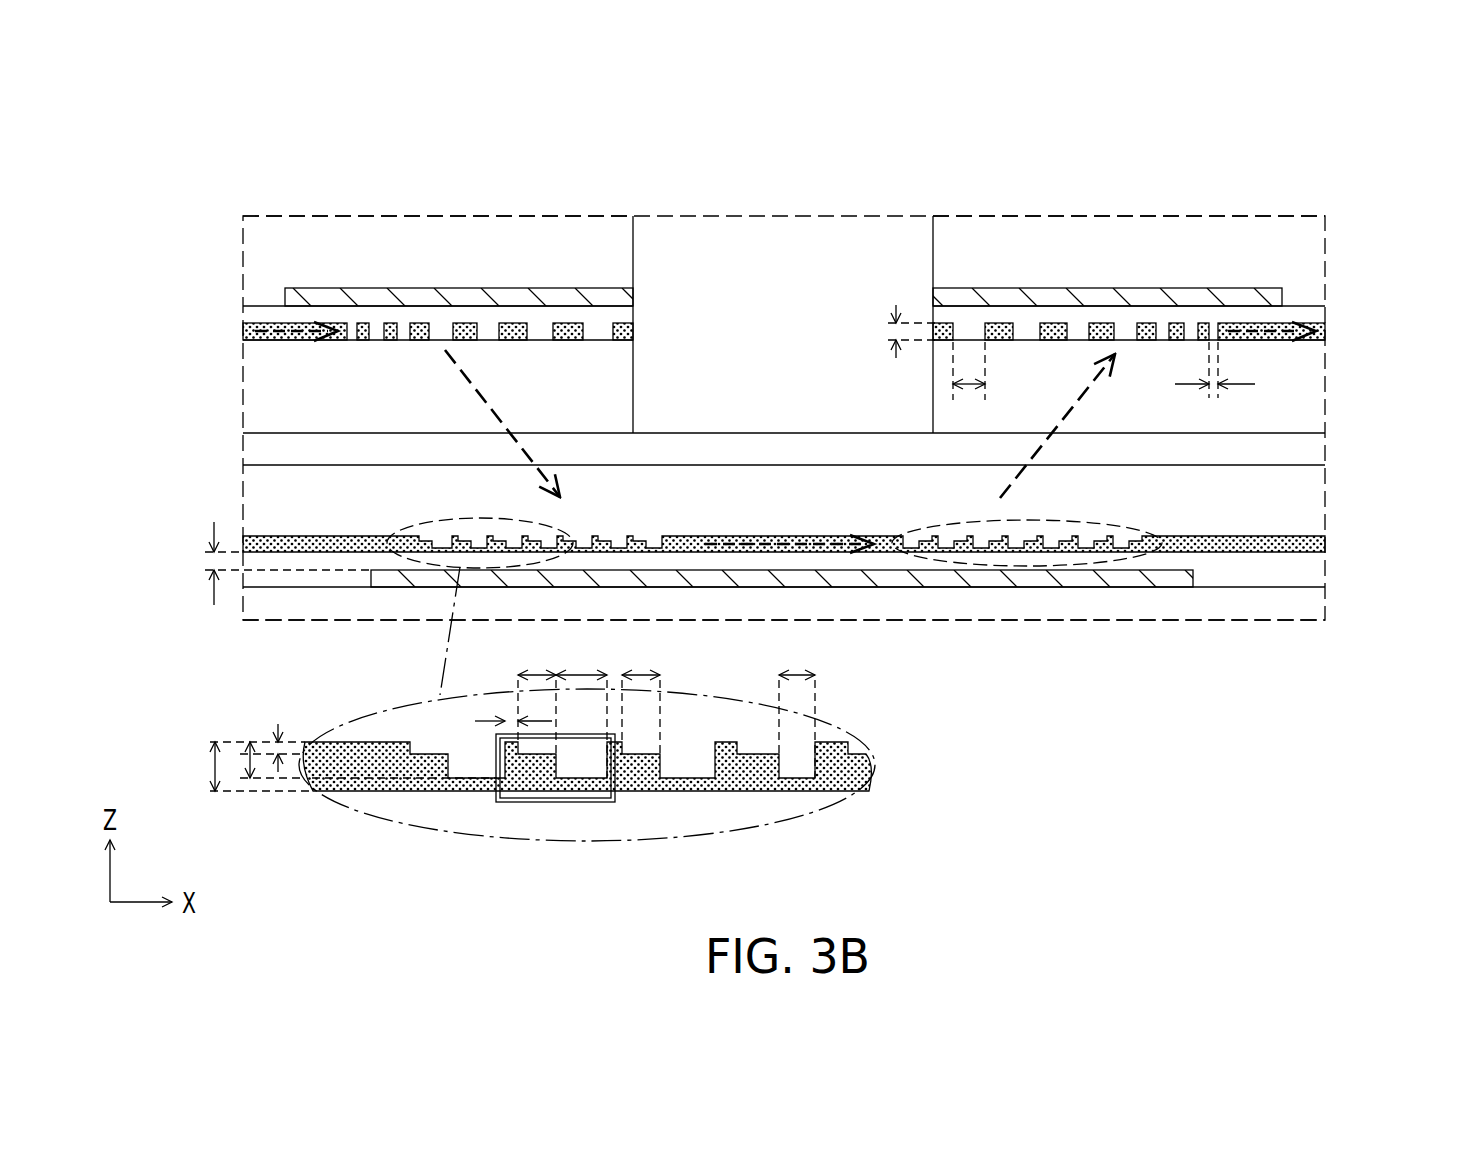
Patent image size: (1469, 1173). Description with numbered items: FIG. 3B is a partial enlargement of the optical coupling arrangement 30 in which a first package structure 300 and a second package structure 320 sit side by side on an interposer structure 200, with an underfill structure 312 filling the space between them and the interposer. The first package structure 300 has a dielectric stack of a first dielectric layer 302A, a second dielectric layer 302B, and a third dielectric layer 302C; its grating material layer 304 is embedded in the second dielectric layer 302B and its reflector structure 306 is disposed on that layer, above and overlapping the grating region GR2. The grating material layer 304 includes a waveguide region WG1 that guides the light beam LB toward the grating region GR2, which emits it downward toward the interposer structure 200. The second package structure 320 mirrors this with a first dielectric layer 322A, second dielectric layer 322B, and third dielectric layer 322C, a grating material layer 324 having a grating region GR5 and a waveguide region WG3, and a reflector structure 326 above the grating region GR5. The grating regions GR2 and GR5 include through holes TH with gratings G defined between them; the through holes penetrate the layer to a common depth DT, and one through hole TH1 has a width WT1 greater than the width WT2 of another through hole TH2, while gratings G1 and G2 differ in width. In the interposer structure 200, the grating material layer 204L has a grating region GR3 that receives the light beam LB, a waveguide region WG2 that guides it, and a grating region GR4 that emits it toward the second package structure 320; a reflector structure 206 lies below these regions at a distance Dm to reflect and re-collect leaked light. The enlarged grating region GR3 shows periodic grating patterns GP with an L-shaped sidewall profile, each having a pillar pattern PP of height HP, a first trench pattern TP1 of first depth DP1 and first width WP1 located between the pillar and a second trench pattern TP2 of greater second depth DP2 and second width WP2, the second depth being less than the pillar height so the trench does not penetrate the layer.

The optical device 30 is at (1382, 112).
The first package structure 300 is at (257, 213).
The second package structure 320 is at (1306, 214).
The interposer structure 200 is at (236, 497).
The third dielectric layer 302C is at (432, 232).
The second dielectric layer 302B is at (254, 317).
The first dielectric layer 302A is at (250, 402).
The reflector structure 306 is at (560, 300).
The waveguide region WG1 is at (245, 332).
The grating material layer 304 is at (365, 334).
The third dielectric layer 322C is at (1316, 252).
The second dielectric layer 322B is at (1308, 306).
The first dielectric layer 322A is at (1316, 383).
The reflector structure 326 is at (1050, 298).
The waveguide region WG3 is at (1316, 327).
The grating material layer 324 is at (1201, 327).
The underfill structure 312 is at (1314, 446).
The grating material layer 204L is at (1316, 534).
The reflector structure 206 is at (925, 588).
The waveguide region WG2 is at (764, 536).
The grating region GR2 is at (510, 347).
The grating region GR3 is at (463, 530).
The grating region GR4 is at (1160, 548).
The grating region GR5 is at (1057, 350).
The grating G is at (393, 341).
The grating G1 is at (990, 332).
The grating G2 is at (1205, 332).
The through hole TH is at (614, 331).
The through hole TH1 is at (956, 328).
The through hole TH2 is at (1213, 328).
The light beam LB is at (495, 410).
The width WT1 is at (970, 383).
The width WT2 is at (1215, 383).
The depth DT is at (895, 331).
The distance Dm is at (269, 563).
The grating pattern GP is at (540, 803).
The height HP is at (245, 766).
The first depth DP1 is at (278, 742).
The second depth DP2 is at (250, 770).
The pillar pattern PP is at (515, 722).
The first trench pattern TP1 is at (538, 695).
The second trench pattern TP2 is at (581, 707).
The first width WP1 is at (643, 695).
The second width WP2 is at (797, 707).